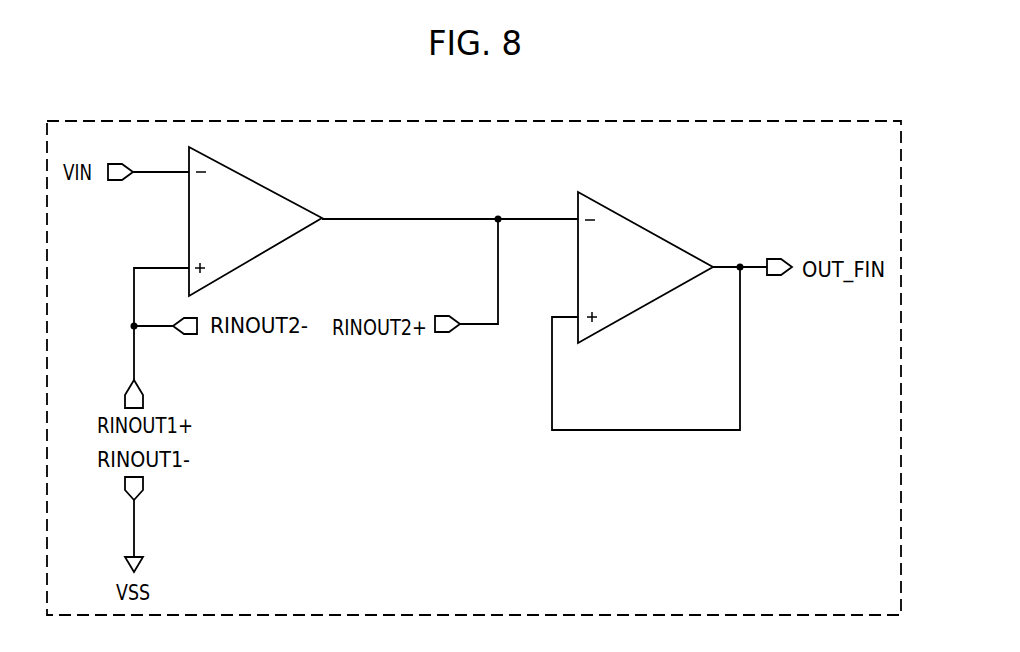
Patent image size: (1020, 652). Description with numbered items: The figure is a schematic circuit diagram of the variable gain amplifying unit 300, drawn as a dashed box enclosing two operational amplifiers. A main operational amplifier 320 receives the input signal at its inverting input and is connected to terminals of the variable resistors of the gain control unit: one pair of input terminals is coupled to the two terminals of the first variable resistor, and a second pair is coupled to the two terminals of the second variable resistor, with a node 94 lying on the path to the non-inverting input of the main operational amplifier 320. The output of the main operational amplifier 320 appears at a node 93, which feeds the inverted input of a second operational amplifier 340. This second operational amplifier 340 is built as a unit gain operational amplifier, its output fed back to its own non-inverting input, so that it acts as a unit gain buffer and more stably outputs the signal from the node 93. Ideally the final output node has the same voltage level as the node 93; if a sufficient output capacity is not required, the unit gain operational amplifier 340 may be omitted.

The variable gain amplifying unit 300 is at (828, 121).
The main operational amplifier 320 is at (240, 174).
The second operational amplifier 340 is at (632, 222).
The node 93 is at (450, 260).
The non-inverting input node 94 is at (164, 324).